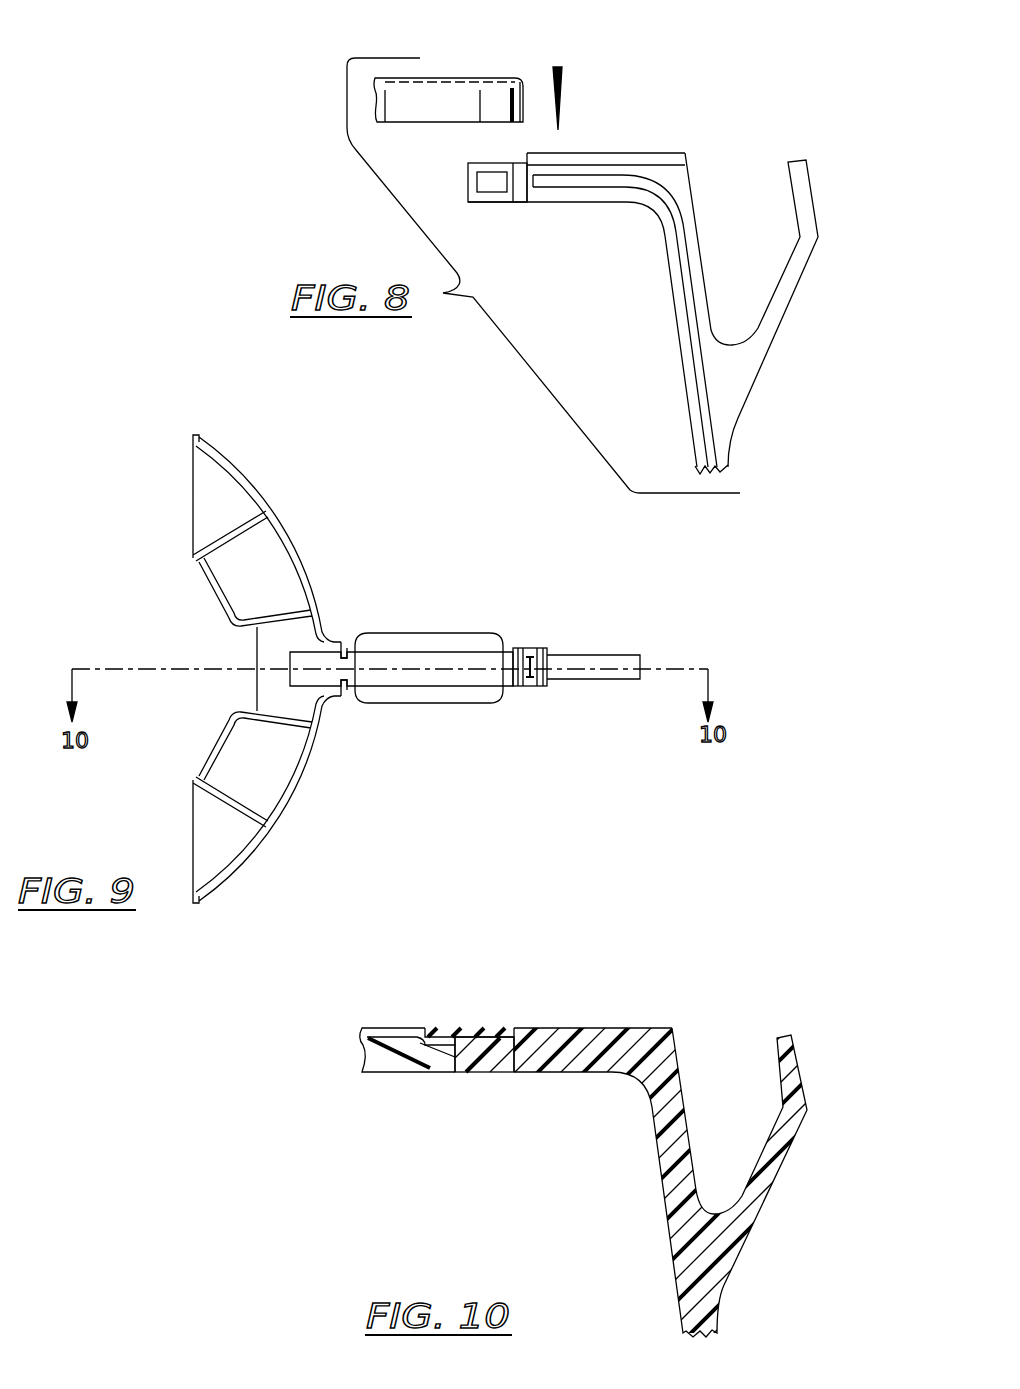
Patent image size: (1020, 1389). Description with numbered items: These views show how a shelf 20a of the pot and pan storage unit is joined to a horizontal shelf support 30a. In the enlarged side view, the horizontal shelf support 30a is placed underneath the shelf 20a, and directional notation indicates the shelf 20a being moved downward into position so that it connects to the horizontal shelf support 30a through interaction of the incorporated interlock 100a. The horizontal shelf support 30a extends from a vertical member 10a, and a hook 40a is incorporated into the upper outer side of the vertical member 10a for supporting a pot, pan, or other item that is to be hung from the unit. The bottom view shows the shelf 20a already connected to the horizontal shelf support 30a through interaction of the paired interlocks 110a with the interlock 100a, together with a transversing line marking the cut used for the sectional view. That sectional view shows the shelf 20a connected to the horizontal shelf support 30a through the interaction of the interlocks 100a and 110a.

In FIG. 8, the vertical member 10a is at (713, 447).
In FIG. 10, the vertical member 10a is at (703, 1270).
In FIG. 8, the shelf 20a is at (447, 97).
In FIG. 9, the shelf 20a is at (272, 782).
In FIG. 10, the shelf 20a is at (383, 1025).
In FIG. 8, the horizontal shelf support 30a is at (655, 170).
In FIG. 9, the horizontal shelf support 30a is at (437, 690).
In FIG. 10, the horizontal shelf support 30a is at (603, 1033).
In FIG. 8, the hook 40a is at (802, 188).
In FIG. 10, the hook 40a is at (780, 1040).
In FIG. 8, the interlock 100a is at (487, 190).
In FIG. 9, the interlock 100a is at (305, 671).
In FIG. 10, the interlock 100a is at (487, 1073).
In FIG. 9, the paired interlocks 110a is at (345, 637).
In FIG. 10, the paired interlocks 110a is at (515, 1027).